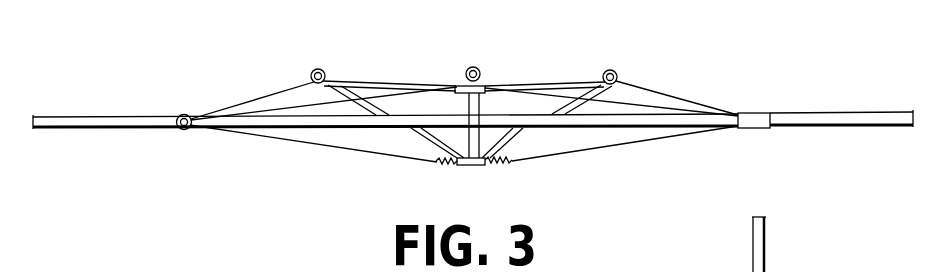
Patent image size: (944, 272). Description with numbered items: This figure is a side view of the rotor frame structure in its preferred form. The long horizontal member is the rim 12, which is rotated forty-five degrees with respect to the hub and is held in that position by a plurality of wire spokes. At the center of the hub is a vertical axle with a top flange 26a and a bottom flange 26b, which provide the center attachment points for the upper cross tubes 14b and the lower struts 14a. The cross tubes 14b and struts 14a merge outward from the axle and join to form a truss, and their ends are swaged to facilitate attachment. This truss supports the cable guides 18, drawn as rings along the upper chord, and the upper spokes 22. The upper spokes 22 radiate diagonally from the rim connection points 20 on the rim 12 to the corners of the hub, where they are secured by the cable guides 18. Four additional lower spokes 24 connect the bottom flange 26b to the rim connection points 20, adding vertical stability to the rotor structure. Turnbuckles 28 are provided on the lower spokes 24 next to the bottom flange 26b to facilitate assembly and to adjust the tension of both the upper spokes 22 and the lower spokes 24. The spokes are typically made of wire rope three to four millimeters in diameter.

The rim 12 is at (133, 118).
The struts 14a is at (413, 132).
The cross tubes 14b is at (392, 86).
The cable guides 18 is at (310, 72).
The rim connection points 20 is at (756, 121).
The upper spokes 22 is at (652, 91).
The lower spokes 24 is at (612, 143).
The top flange 26a is at (485, 84).
The bottom flange 26b is at (458, 166).
The turnbuckles 28 is at (507, 162).